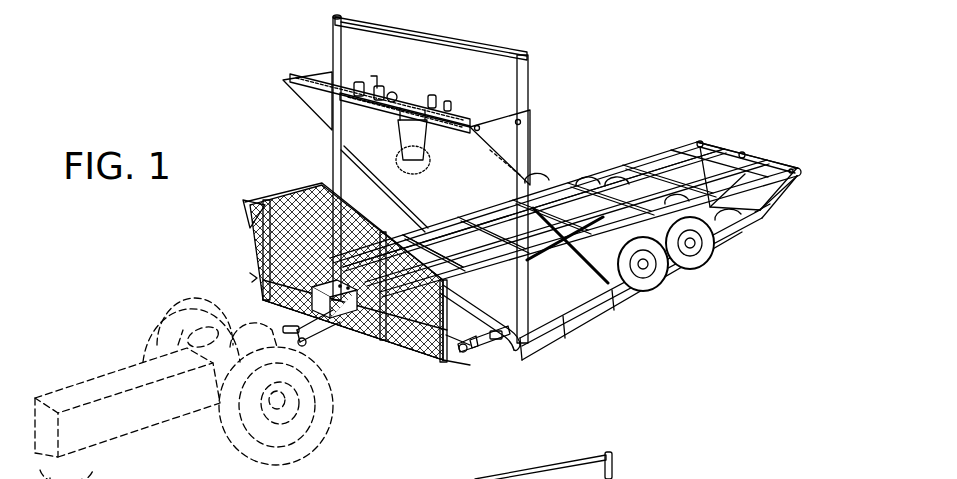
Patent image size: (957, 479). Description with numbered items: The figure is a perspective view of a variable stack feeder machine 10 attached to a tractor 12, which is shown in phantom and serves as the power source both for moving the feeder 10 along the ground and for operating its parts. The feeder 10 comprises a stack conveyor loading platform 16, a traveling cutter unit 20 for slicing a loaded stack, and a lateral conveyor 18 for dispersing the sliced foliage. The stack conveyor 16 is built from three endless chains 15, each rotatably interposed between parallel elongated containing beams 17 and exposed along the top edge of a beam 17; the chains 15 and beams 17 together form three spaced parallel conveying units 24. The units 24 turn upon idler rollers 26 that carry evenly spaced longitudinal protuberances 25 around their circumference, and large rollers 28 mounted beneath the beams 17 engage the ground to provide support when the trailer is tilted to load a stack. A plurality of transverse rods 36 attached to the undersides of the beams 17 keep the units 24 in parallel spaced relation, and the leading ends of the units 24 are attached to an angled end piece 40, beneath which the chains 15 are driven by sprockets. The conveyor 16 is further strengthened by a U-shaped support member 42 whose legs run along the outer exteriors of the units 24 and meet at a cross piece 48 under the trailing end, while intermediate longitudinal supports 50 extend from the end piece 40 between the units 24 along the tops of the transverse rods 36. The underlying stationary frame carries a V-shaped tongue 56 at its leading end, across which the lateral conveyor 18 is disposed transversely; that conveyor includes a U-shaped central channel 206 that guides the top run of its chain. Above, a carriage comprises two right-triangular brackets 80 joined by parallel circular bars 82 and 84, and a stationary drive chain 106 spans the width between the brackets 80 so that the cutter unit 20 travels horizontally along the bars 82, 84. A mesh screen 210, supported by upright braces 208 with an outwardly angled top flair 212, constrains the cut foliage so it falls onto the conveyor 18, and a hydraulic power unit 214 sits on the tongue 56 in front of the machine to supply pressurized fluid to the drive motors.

The feeder machine 10 is at (226, 100).
The tractor 12 is at (100, 372).
The endless chain 15 is at (700, 160).
The stack conveyor loading platform 16 is at (668, 97).
The elongated containing beam 17 is at (597, 185).
The lateral conveyor 18 is at (460, 355).
The traveling cutter unit 20 is at (392, 133).
The conveying unit 24 is at (698, 148).
The longitudinal protuberance 25 is at (744, 158).
The idler roller 26 is at (715, 154).
The large roller 28 is at (622, 196).
The transverse rod 36 is at (585, 190).
The angled end piece 40 is at (480, 352).
The U-shaped support member 42 is at (556, 182).
The cross piece 48 is at (765, 195).
The intermediate longitudinal support 50 is at (445, 262).
The V-shaped tongue 56 is at (325, 340).
The bracket 80 is at (406, 179).
The circular bar 82 is at (358, 108).
The circular bar 84 is at (352, 86).
The stationary drive chain 106 is at (455, 106).
The U-shaped central channel 206 is at (495, 342).
The upright brace 208 is at (450, 348).
The mesh screen 210 is at (443, 330).
The top flair 212 is at (245, 222).
The power unit 214 is at (350, 322).